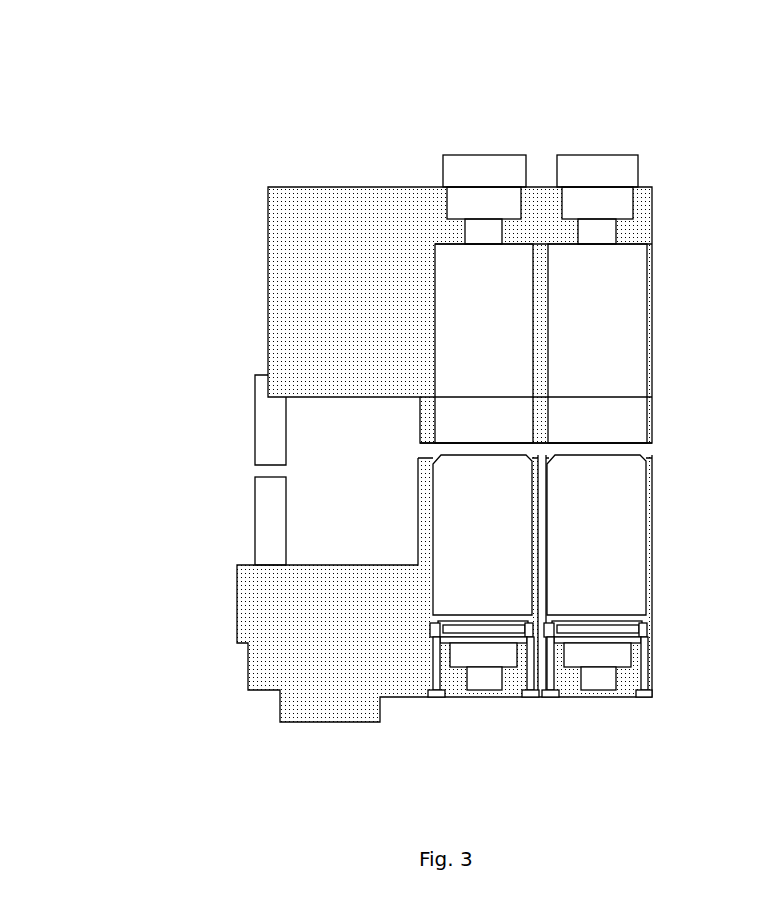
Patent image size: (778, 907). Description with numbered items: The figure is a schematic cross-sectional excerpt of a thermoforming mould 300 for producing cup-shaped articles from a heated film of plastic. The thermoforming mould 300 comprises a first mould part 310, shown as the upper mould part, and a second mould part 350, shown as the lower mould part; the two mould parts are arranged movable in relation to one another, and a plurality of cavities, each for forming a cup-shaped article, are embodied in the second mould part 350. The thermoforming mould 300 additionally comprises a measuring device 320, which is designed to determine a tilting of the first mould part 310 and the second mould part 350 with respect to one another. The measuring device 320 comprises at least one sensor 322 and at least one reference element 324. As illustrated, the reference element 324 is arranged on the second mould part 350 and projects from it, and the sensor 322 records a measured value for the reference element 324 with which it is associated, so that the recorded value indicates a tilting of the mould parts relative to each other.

The thermoforming mould 300 is at (163, 61).
The first mould part 310 is at (300, 240).
The measuring device 320 is at (150, 414).
The sensor 322 is at (263, 438).
The reference element 324 is at (262, 519).
The second mould part 350 is at (262, 635).